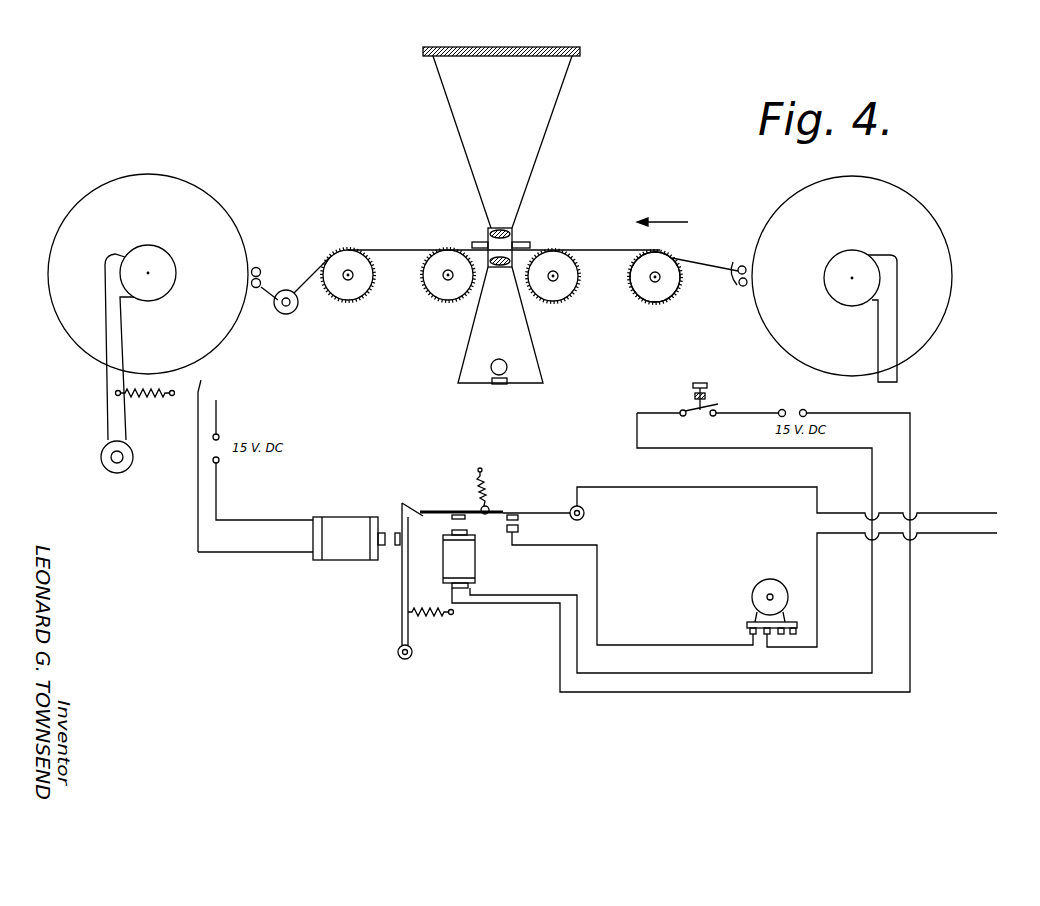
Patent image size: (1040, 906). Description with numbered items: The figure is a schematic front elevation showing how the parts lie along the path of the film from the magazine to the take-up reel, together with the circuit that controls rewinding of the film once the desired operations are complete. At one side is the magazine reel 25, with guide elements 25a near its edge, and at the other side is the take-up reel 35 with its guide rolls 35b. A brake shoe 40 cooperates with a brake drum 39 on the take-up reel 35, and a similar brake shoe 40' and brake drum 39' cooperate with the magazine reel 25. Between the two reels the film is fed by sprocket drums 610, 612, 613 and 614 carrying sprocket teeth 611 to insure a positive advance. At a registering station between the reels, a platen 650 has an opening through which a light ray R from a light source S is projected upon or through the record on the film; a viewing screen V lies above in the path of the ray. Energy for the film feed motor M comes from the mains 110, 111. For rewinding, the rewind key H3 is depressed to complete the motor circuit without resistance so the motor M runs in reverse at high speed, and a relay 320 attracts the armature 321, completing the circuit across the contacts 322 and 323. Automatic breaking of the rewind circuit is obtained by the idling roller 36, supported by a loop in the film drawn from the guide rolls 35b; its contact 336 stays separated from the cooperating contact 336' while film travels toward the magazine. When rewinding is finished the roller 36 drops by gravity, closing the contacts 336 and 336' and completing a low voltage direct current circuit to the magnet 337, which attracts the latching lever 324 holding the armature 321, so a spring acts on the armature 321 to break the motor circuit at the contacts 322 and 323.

The magazine reel 25 is at (852, 276).
The guide rollers 25a is at (742, 266).
The take-up reel 35 is at (148, 274).
The guide rolls 35b is at (260, 277).
The idling roller 36 is at (296, 310).
The brake drum 39 is at (164, 273).
The brake drum 39' is at (845, 292).
The brake shoe 40 is at (138, 363).
The brake shoe 40' is at (898, 318).
The main 110 is at (973, 502).
The main 111 is at (957, 537).
The relay 320 is at (475, 570).
The armature 321 is at (438, 509).
The contact 322 is at (515, 512).
The contact 323 is at (520, 528).
The latching lever 324 is at (402, 585).
The contact 336 is at (170, 295).
The cooperating contact 336' is at (159, 309).
The magnet 337 is at (358, 505).
The sprocket drum 610 is at (672, 293).
The sprocket teeth 611 is at (632, 289).
The sprocket drum 612 is at (568, 292).
The sprocket drum 613 is at (437, 290).
The sprocket drum 614 is at (355, 300).
The platen 650 is at (528, 240).
The rewind key H3 is at (693, 396).
The film feed motor M is at (770, 580).
The light ray R is at (515, 345).
The light source S is at (491, 378).
The viewing screen V is at (509, 136).